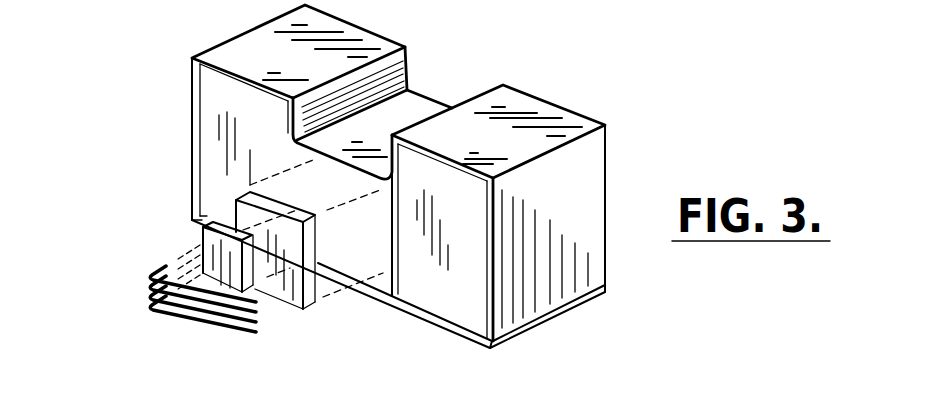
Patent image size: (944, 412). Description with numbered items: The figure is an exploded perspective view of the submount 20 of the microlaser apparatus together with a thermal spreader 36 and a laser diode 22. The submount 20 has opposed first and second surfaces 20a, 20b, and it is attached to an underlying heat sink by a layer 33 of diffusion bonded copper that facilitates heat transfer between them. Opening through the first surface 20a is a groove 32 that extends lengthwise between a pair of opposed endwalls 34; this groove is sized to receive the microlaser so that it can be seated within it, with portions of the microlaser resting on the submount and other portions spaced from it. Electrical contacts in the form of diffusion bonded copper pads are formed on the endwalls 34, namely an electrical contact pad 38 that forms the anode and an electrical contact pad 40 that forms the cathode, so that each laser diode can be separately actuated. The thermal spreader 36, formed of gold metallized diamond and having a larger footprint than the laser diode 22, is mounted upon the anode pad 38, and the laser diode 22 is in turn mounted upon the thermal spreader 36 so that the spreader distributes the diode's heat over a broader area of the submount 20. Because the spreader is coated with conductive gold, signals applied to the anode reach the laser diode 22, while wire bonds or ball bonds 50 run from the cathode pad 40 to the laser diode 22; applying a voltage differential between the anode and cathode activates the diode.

The submount 20 is at (267, 45).
The first surface 20a is at (535, 123).
The second surface 20b is at (607, 292).
The laser diode 22 is at (205, 238).
The groove 32 is at (448, 68).
The layer of diffusion bonded copper 33 is at (490, 347).
The endwall 34 is at (607, 190).
The thermal spreader 36 is at (237, 210).
The electrical contact pad 38 is at (452, 292).
The electrical contact pad 40 is at (368, 248).
The wire bonds 50 is at (162, 266).